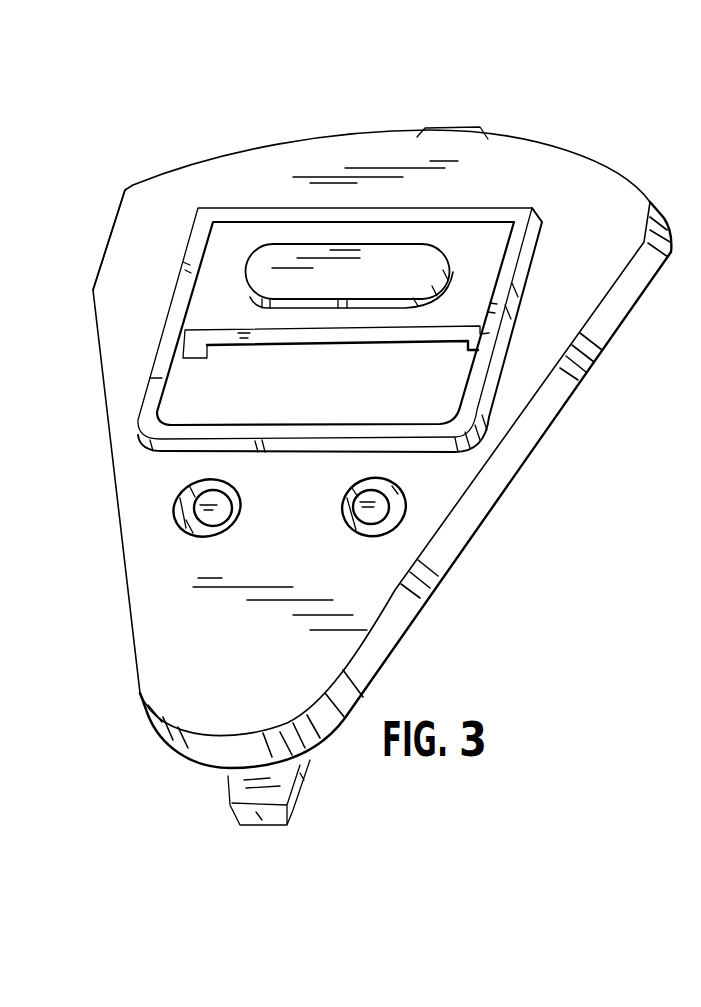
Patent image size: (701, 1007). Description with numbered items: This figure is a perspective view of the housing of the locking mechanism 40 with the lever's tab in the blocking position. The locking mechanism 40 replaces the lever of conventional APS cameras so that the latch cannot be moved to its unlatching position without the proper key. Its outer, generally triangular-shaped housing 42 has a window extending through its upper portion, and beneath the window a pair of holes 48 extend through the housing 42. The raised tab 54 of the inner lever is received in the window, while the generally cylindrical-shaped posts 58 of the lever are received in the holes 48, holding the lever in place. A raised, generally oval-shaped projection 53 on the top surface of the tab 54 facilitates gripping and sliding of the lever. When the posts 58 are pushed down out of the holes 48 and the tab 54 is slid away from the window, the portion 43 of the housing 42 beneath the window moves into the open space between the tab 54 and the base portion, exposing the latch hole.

The locking mechanism 40 is at (630, 148).
The housing 42 is at (130, 333).
The portion of the housing beneath the window 43 is at (443, 380).
The holes 48 is at (396, 490).
The raised generally oval-shaped projection 53 is at (305, 255).
The raised tab 54 is at (212, 288).
The post 58 is at (175, 498).